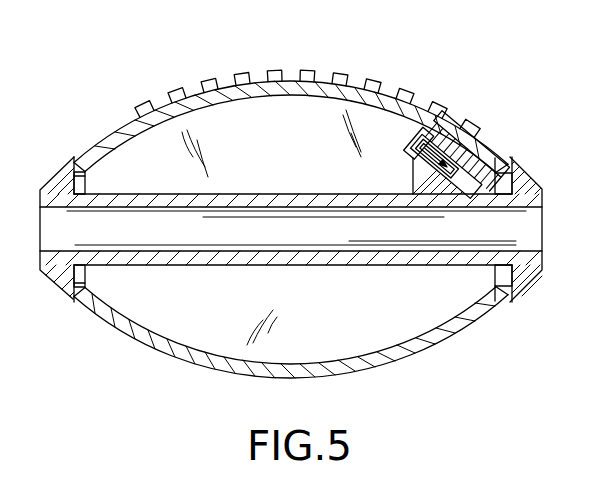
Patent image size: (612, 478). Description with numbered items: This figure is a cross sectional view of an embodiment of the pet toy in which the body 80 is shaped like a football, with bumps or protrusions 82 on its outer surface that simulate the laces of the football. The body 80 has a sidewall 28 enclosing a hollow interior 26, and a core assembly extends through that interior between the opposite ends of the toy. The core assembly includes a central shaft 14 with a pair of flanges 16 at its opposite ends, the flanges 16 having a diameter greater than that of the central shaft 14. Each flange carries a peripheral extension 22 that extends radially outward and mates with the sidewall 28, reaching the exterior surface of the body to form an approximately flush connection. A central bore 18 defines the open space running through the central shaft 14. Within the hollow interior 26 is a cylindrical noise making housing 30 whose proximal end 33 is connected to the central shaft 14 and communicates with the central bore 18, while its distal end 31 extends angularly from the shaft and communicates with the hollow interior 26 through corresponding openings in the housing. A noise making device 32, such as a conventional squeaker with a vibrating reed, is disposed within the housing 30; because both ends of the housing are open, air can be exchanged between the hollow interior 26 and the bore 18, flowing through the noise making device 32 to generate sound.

The central shaft 14 is at (170, 196).
The flanges 16 is at (58, 182).
The central bore 18 is at (270, 210).
The peripheral extension 22 is at (70, 170).
The hollow interior 26 is at (245, 133).
The sidewall 28 is at (172, 108).
The noise making housing 30 is at (452, 152).
The distal end 31 is at (416, 143).
The noise making device 32 is at (416, 166).
The proximal end 33 is at (466, 202).
The body 80 is at (426, 100).
The bumps or protrusions 82 is at (358, 80).